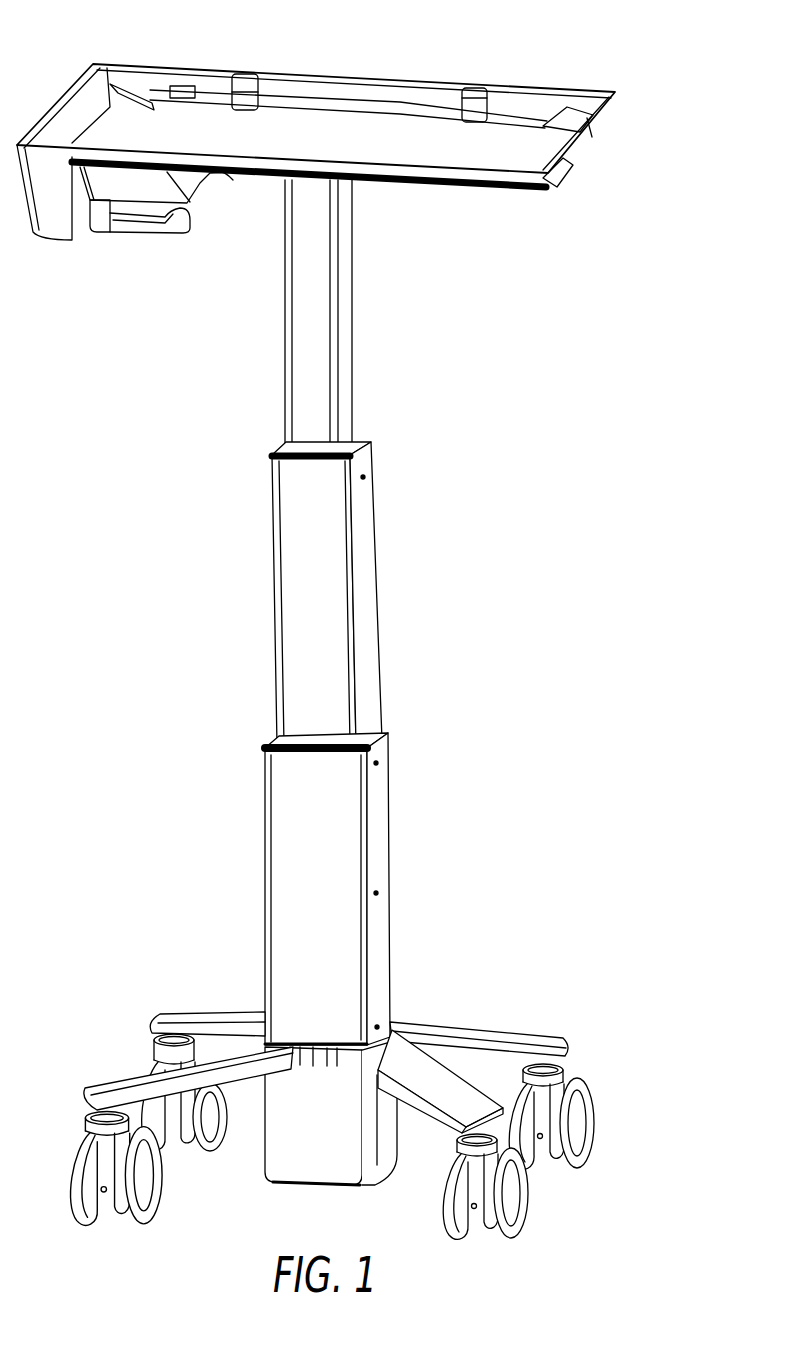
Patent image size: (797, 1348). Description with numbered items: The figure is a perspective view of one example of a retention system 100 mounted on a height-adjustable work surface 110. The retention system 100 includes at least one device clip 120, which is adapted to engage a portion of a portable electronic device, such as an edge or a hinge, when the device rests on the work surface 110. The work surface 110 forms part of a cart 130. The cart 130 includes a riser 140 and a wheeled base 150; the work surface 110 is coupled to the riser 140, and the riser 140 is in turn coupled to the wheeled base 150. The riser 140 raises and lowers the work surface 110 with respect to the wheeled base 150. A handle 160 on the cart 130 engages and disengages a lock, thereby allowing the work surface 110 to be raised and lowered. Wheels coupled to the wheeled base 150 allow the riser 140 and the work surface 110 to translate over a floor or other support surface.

The retention system 100 is at (197, 52).
The work surface 110 is at (393, 90).
The device clip 120 is at (255, 90).
The cart 130 is at (673, 143).
The riser 140 is at (413, 607).
The wheeled base 150 is at (202, 990).
The handle 160 is at (108, 220).